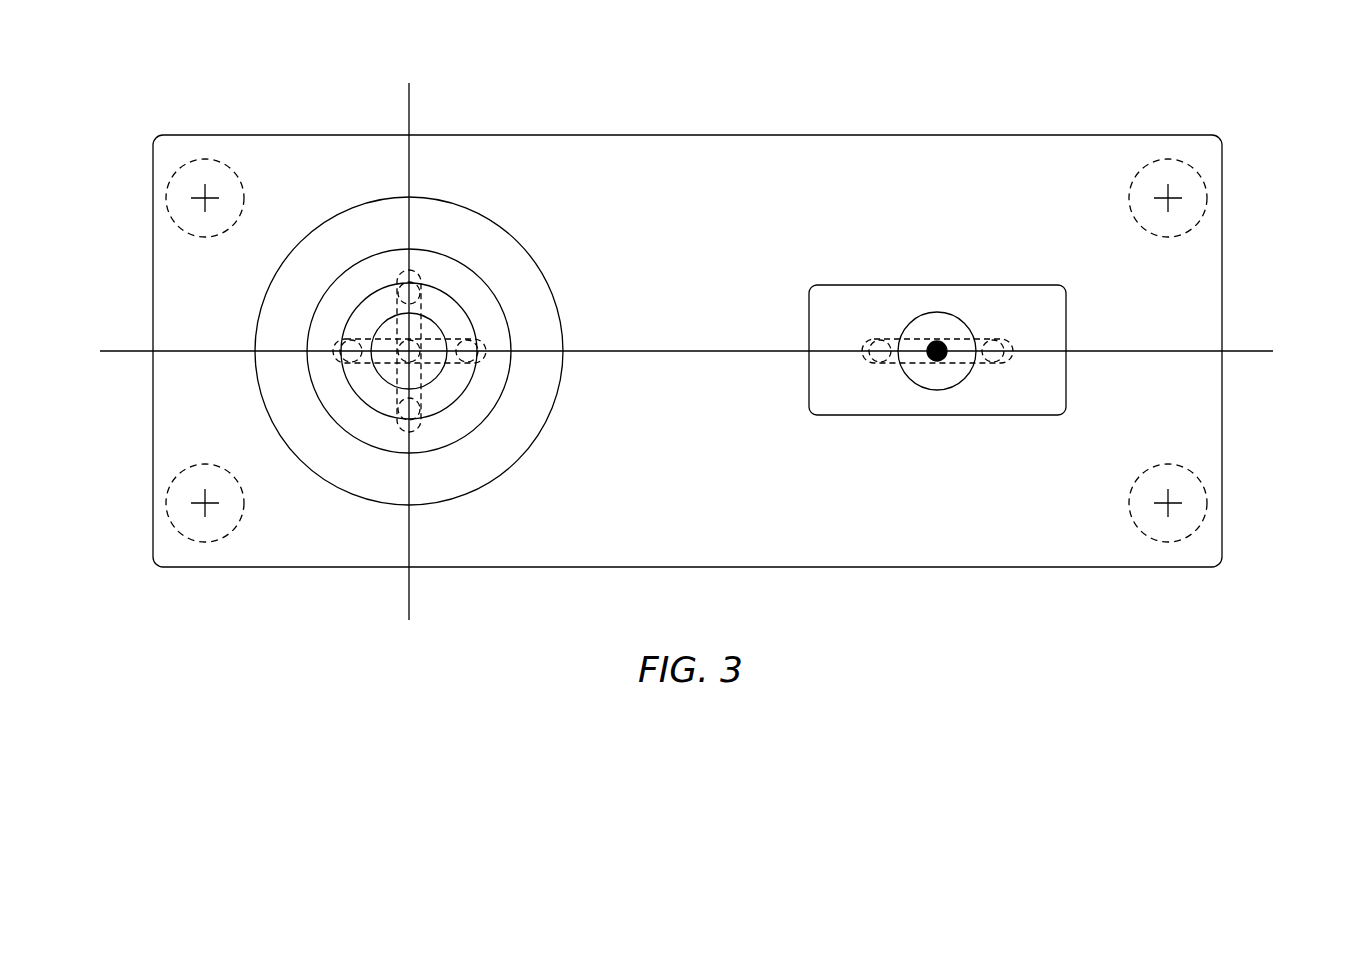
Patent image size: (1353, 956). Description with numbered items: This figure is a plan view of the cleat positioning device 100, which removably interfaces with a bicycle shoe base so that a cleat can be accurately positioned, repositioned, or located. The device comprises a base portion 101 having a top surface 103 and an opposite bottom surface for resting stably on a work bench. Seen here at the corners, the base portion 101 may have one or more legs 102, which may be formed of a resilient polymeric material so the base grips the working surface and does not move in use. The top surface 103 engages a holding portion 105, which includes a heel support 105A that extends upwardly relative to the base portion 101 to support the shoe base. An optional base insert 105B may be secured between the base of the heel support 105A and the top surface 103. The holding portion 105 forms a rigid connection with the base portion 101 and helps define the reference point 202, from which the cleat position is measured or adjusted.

The cleat positioning device 100 is at (148, 88).
The base portion 101 is at (1248, 437).
The legs 102 is at (190, 515).
The top surface 103 is at (792, 517).
The holding portion 105 is at (1072, 357).
The heel support 105A is at (955, 340).
The base insert 105B is at (1000, 395).
The reference point 202 is at (937, 346).